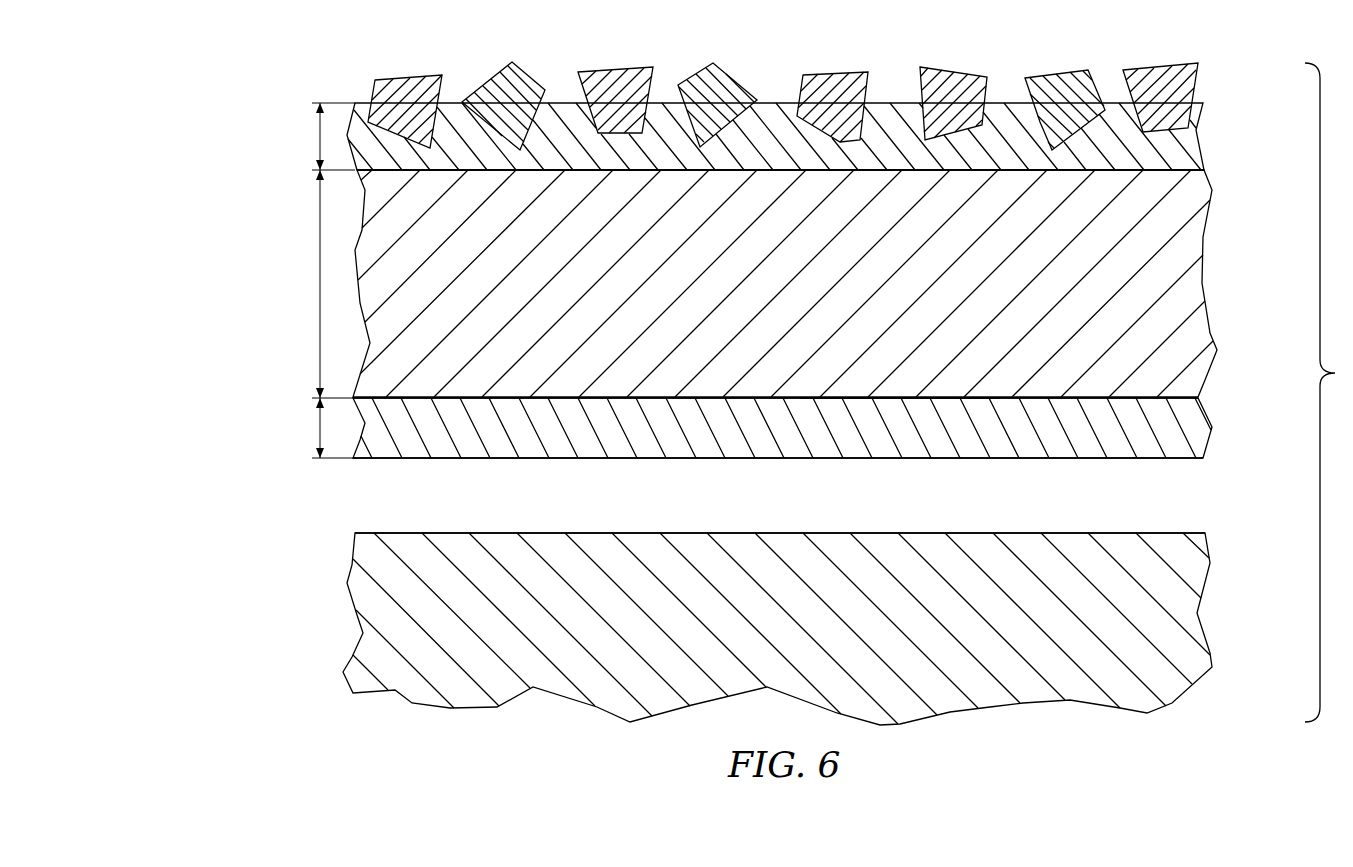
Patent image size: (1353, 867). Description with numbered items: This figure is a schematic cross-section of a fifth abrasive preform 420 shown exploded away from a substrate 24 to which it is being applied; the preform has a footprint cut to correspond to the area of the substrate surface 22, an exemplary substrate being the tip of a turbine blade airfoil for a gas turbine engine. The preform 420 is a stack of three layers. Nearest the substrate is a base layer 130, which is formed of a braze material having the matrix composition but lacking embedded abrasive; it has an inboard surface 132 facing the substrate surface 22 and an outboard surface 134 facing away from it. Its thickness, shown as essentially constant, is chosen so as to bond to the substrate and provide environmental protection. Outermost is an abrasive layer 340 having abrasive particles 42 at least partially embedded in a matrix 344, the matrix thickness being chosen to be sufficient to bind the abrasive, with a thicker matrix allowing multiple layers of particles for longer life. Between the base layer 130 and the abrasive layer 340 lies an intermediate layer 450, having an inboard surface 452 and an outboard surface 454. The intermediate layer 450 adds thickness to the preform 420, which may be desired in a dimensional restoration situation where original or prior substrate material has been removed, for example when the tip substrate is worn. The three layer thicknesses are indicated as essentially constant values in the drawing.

The surface 22 is at (405, 533).
The substrate 24 is at (338, 617).
The abrasive particles 42 is at (712, 78).
The base layer 130 is at (1185, 440).
The inboard surface 132 is at (780, 460).
The outboard surface 134 is at (893, 398).
The abrasive layer 340 is at (819, 92).
The matrix 344 is at (775, 132).
The preform 420 is at (272, 72).
The intermediate layer 450 is at (1185, 275).
The inboard surface 452 is at (1172, 418).
The outboard surface 454 is at (886, 170).